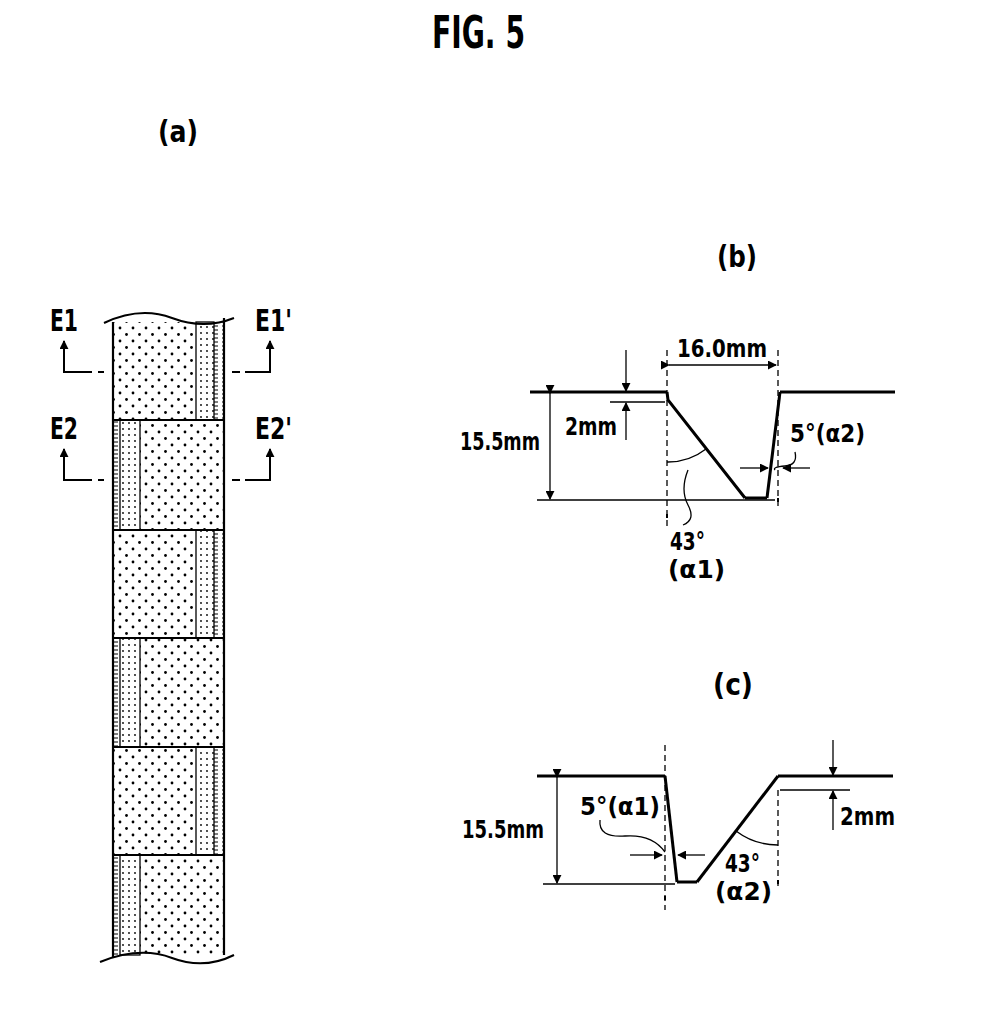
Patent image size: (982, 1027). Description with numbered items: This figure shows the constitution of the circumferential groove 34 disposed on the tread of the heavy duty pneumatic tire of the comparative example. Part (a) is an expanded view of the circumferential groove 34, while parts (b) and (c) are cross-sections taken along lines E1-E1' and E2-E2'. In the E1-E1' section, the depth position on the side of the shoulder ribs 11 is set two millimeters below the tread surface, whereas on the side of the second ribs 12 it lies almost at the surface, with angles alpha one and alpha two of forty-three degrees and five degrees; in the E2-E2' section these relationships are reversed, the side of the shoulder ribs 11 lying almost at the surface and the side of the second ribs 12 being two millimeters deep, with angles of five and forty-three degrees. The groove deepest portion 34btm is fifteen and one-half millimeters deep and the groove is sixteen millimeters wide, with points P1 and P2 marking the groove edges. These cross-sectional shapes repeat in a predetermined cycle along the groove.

The circumferential groove 34 is at (170, 286).
The groove deepest portion 34btm is at (212, 402).
The shoulder ribs 11 is at (572, 386).
The second ribs 12 is at (845, 386).
The groove edge point P1 is at (665, 515).
The groove edge point P2 is at (782, 500).